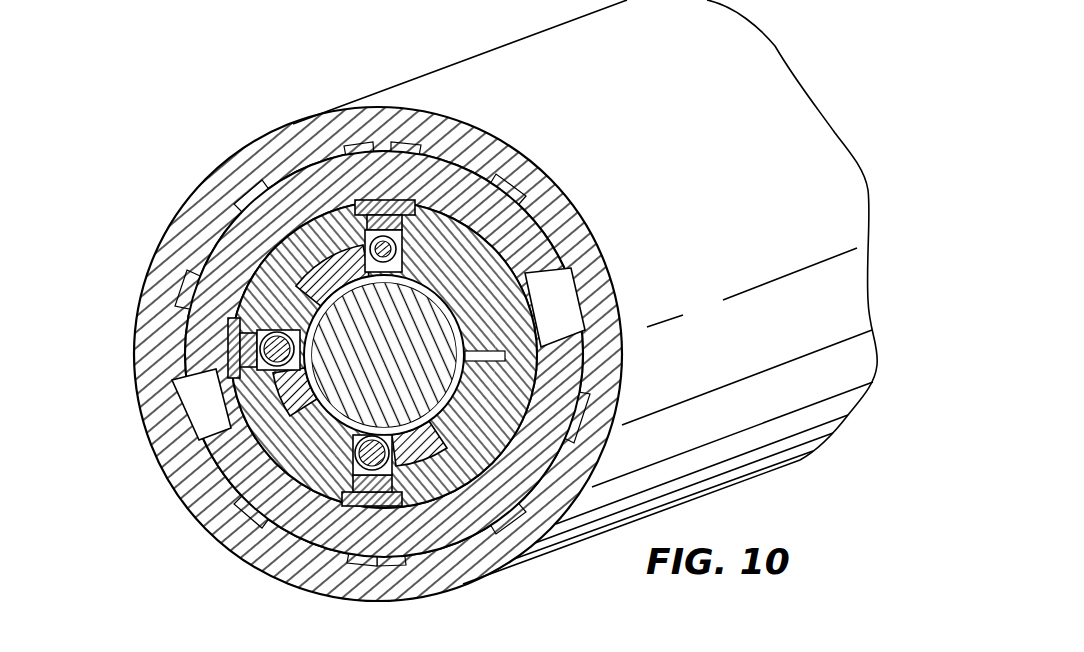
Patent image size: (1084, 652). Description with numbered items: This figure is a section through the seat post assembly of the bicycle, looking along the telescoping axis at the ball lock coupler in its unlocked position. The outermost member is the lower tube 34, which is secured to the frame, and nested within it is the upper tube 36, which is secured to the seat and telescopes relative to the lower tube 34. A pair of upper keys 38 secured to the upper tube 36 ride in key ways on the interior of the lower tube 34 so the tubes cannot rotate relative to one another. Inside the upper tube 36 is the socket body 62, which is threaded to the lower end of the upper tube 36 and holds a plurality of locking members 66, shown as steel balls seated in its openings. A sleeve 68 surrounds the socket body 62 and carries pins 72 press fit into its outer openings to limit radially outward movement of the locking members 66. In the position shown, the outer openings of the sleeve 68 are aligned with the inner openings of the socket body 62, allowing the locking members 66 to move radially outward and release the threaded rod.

The lower tube 34 is at (567, 67).
The upper tube 36 is at (385, 178).
The upper keys 38 is at (570, 312).
The socket body 62 is at (307, 290).
The locking members 66 is at (370, 452).
The sleeve 68 is at (315, 232).
The pins 72 is at (258, 346).